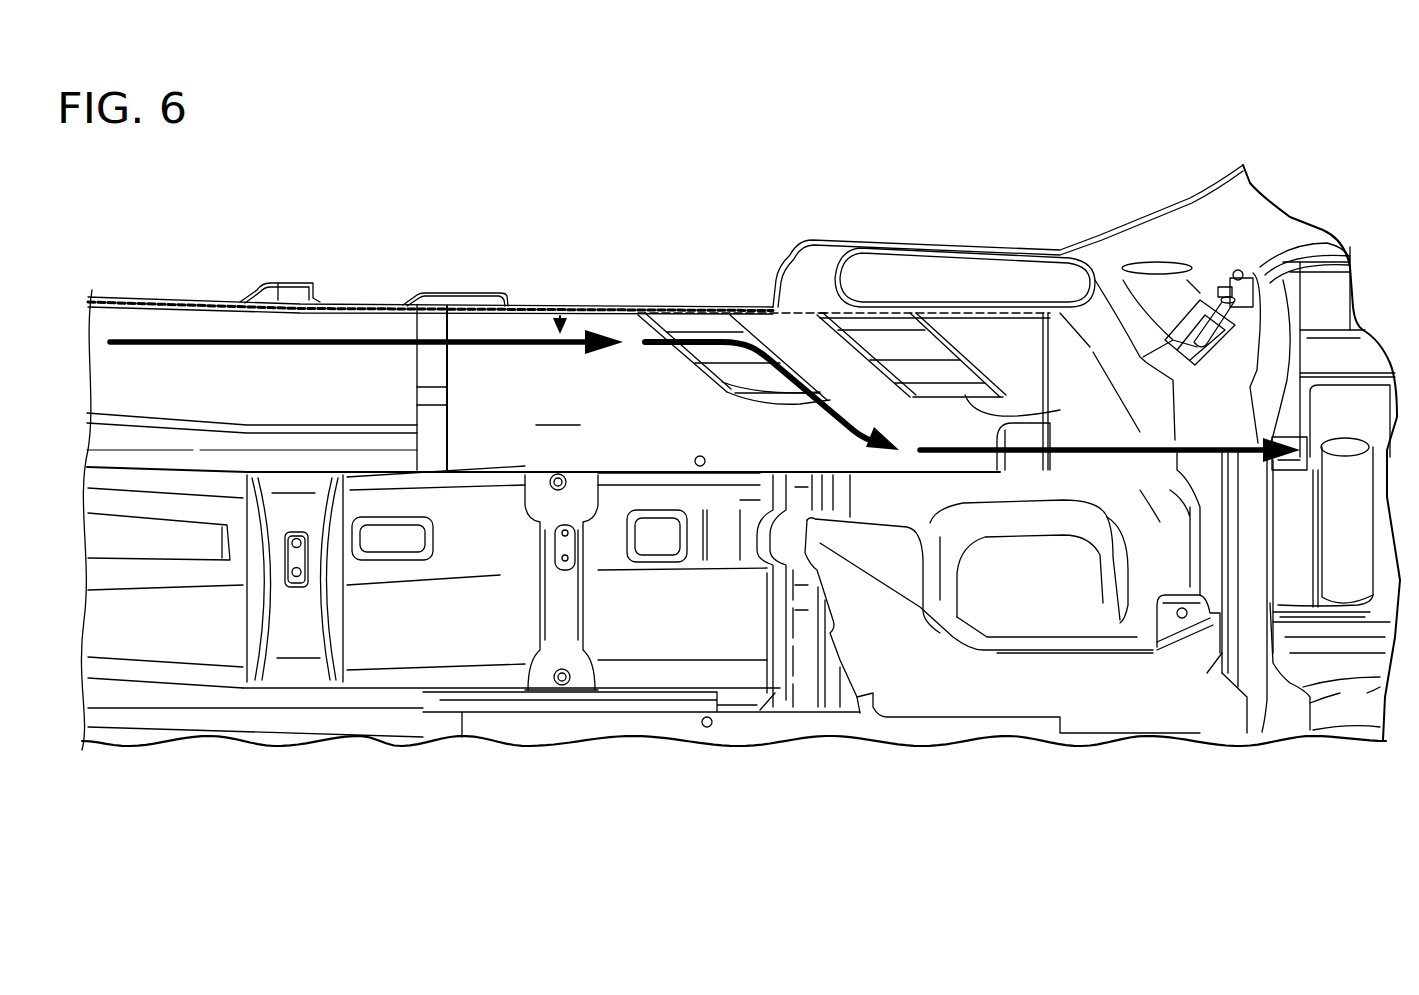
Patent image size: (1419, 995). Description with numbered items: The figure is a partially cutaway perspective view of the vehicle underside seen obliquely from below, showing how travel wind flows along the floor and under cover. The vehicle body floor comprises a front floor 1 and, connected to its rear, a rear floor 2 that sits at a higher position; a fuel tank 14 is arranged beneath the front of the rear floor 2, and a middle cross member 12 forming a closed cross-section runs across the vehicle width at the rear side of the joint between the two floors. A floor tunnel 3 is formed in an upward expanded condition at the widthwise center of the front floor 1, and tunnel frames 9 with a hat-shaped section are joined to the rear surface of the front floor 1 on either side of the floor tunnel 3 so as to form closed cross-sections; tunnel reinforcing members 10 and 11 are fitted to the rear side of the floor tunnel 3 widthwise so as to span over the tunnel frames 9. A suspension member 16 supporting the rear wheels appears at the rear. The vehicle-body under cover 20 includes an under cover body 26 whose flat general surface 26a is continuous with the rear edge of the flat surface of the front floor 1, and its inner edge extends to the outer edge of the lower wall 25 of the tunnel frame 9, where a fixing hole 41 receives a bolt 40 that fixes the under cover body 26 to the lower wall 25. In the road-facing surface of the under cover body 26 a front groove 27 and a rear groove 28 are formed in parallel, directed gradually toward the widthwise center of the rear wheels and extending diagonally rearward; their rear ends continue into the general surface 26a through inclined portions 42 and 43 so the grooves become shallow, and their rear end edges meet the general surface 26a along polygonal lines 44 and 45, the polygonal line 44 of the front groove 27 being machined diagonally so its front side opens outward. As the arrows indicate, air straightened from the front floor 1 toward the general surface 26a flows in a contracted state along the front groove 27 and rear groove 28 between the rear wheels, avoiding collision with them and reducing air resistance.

The front floor 1 is at (368, 323).
The rear floor 2 is at (1207, 457).
The floor tunnel 3 is at (450, 560).
The tunnel frame 9 is at (298, 442).
The tunnel reinforcing member 10 is at (292, 650).
The tunnel reinforcing member 11 is at (565, 632).
The middle cross member 12 is at (808, 650).
The fuel tank 14 is at (1062, 260).
The suspension member 16 is at (1240, 653).
The vehicle-body under cover 20 is at (558, 316).
The lower wall 25 is at (255, 457).
The under cover body 26 is at (516, 328).
The general surface 26a is at (558, 410).
The front groove 27 is at (720, 318).
The rear groove 28 is at (892, 320).
The bolt 40 is at (657, 529).
The fixing hole 41 is at (695, 458).
The inclined portion 42 is at (713, 347).
The inclined portion 43 is at (798, 380).
The polygonal line 44 is at (780, 404).
The polygonal line 45 is at (987, 417).